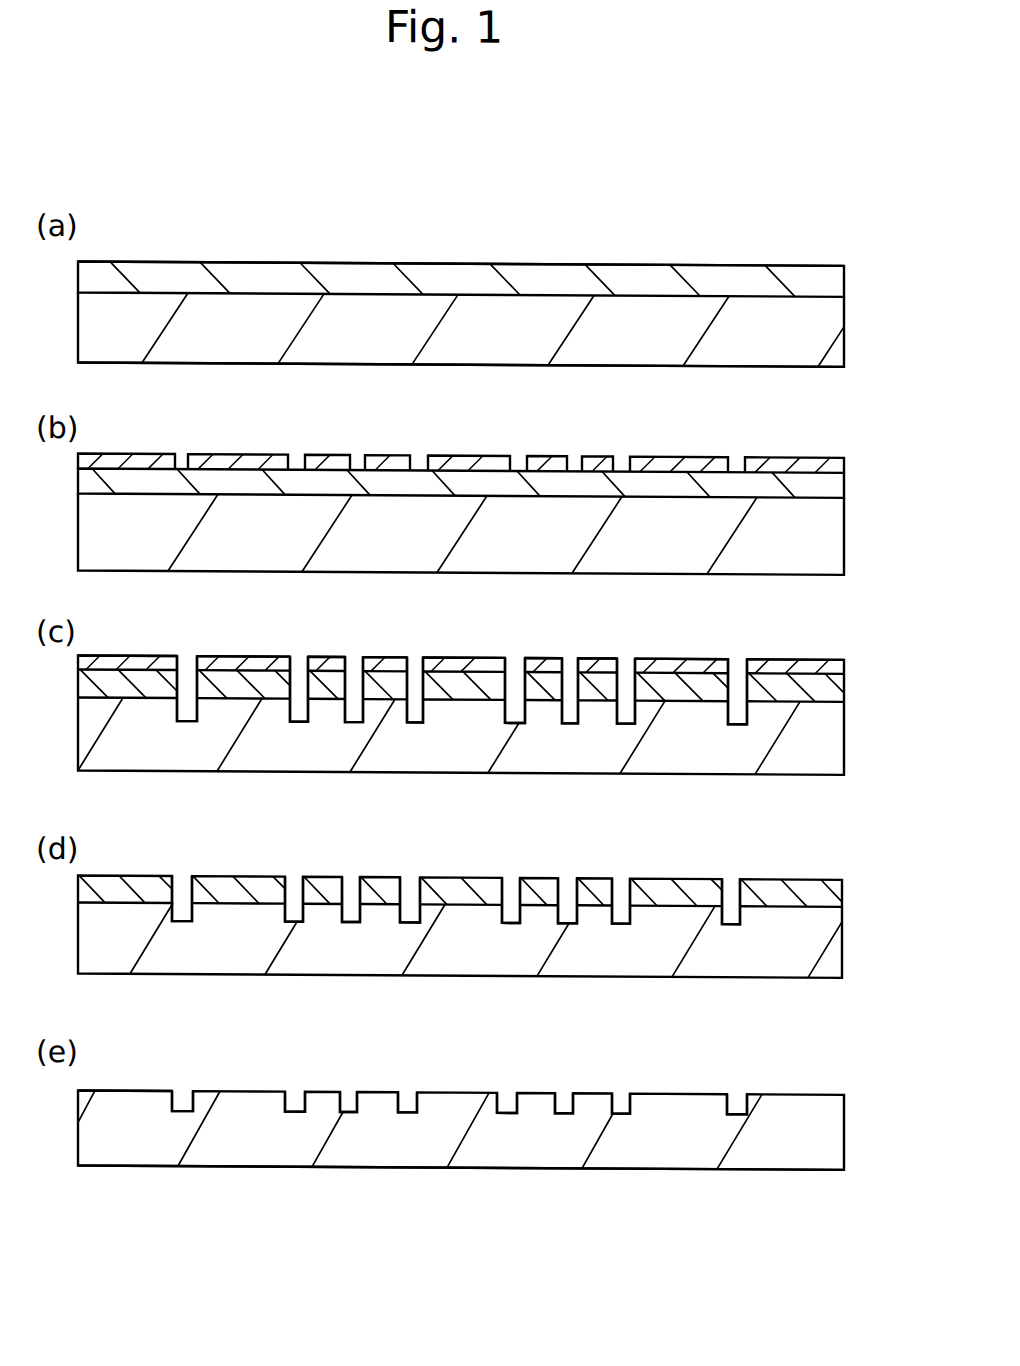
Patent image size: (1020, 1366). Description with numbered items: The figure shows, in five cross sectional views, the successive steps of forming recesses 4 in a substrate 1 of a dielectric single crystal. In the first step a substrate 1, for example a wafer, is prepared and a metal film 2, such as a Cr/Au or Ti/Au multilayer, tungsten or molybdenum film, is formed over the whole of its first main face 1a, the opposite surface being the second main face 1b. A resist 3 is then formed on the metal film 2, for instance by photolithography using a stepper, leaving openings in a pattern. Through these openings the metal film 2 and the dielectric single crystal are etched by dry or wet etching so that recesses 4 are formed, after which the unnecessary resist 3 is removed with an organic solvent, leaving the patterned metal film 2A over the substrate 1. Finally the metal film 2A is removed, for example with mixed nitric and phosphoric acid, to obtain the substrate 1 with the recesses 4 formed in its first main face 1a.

The substrate 1 is at (838, 338).
The first main face 1a is at (625, 284).
The second main face 1b is at (667, 363).
The metal film 2 is at (838, 277).
The metal film 2A is at (840, 677).
The resist 3 is at (140, 452).
The recess 4 is at (308, 711).